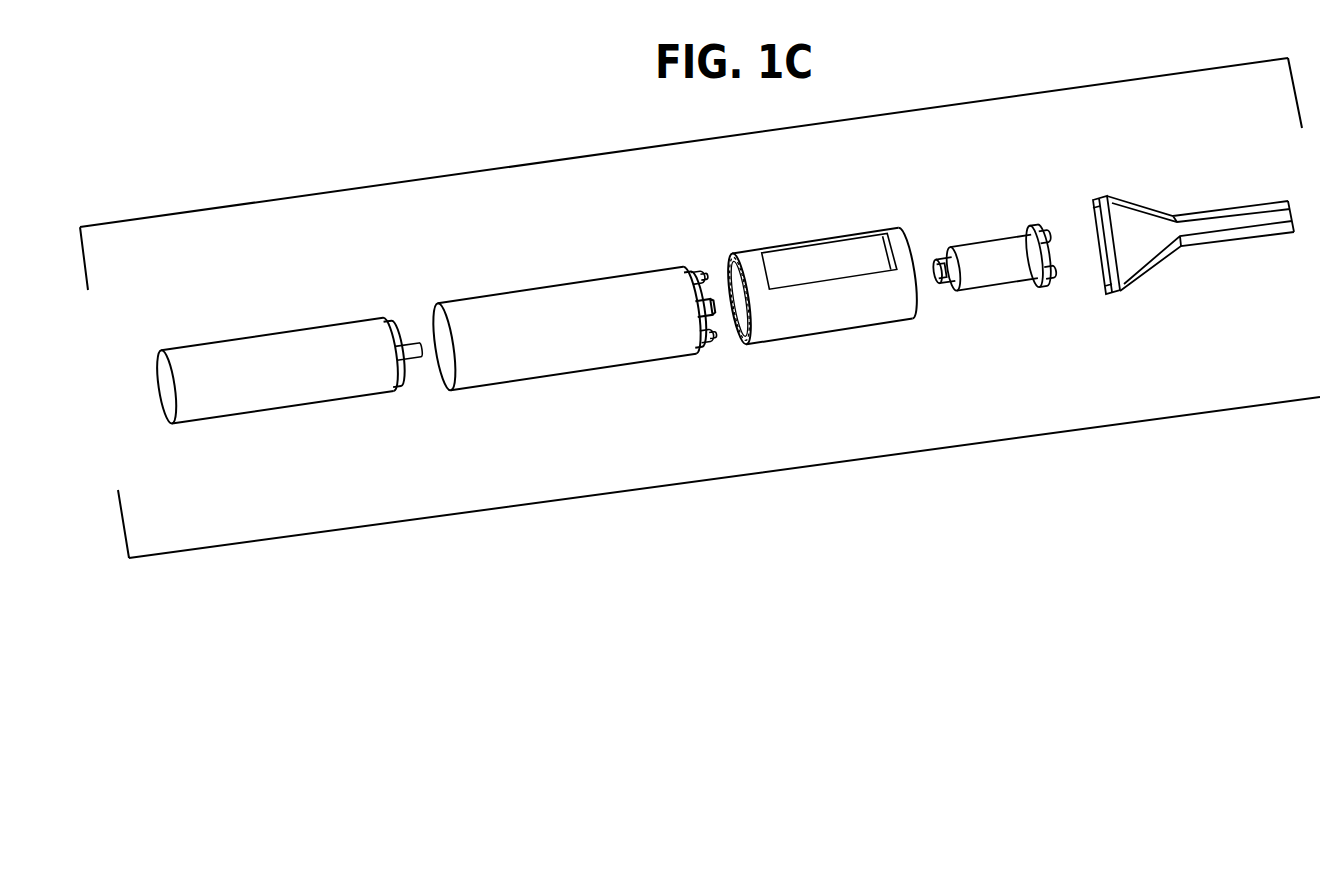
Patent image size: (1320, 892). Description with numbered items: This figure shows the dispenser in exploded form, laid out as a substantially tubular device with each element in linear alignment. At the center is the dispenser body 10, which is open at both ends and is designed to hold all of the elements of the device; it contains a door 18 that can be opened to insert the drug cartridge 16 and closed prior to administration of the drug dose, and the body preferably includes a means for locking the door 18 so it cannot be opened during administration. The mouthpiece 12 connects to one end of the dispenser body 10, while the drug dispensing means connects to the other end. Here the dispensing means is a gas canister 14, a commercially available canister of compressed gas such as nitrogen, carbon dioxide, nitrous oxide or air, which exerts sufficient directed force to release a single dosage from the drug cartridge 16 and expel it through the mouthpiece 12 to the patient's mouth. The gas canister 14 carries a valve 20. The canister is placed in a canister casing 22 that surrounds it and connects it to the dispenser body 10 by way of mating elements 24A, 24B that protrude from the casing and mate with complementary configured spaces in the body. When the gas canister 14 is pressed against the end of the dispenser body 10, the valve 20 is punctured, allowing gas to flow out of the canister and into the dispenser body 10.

The dispenser body 10 is at (840, 338).
The mouthpiece 12 is at (1228, 207).
The gas canister 14 is at (275, 327).
The drug cartridge 16 is at (990, 240).
The door 18 is at (830, 253).
The valve 20 is at (412, 362).
The canister casing 22 is at (592, 378).
The mating element 24A is at (700, 272).
The mating element 24B is at (705, 346).